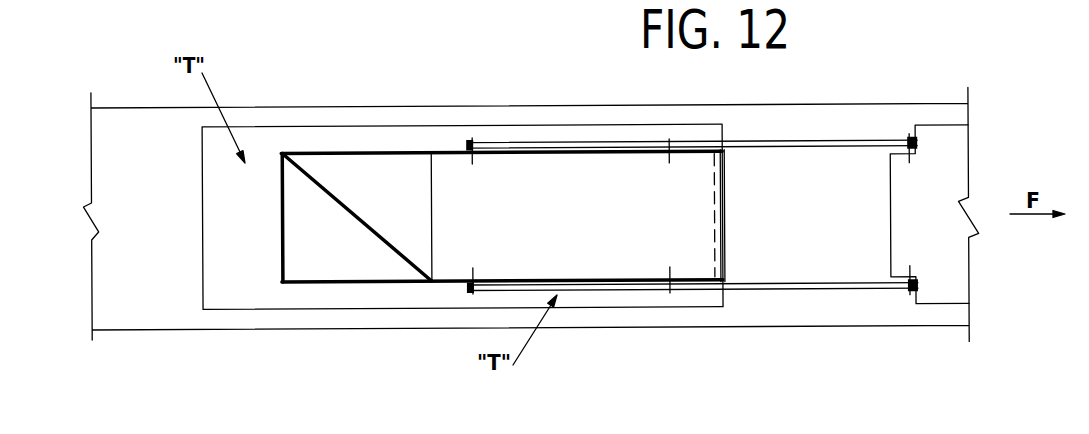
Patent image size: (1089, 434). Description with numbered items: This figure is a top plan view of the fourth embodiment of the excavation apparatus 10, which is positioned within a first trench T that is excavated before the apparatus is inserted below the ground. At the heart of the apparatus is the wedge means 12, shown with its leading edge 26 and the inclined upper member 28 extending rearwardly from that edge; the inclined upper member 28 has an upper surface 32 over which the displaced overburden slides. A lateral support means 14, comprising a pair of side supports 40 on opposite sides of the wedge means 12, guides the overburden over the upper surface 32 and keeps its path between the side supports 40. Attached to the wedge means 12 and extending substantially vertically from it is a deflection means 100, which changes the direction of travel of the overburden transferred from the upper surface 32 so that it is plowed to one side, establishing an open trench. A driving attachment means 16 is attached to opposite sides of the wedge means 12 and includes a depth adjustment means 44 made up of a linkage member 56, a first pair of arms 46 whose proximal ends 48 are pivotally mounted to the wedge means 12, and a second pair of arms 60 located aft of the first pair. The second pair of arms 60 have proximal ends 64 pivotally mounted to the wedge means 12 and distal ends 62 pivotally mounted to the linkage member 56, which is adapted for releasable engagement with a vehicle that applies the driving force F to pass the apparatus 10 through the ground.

The excavation apparatus 10 is at (410, 45).
The wedge means 12 is at (611, 304).
The lateral support means 14 is at (739, 172).
The driving attachment means 16 is at (908, 89).
The leading edge 26 is at (743, 288).
The inclined upper member 28 is at (511, 162).
The upper surface 32 is at (567, 170).
The side supports 40 is at (437, 152).
The depth adjustment means 44 is at (859, 114).
The first pair of arms 46 is at (828, 148).
The proximal ends 48 is at (681, 145).
The linkage member 56 is at (944, 160).
The second pair of arms 60 is at (710, 147).
The distal ends 62 is at (881, 146).
The proximal ends 64 is at (471, 143).
The deflection means 100 is at (322, 301).